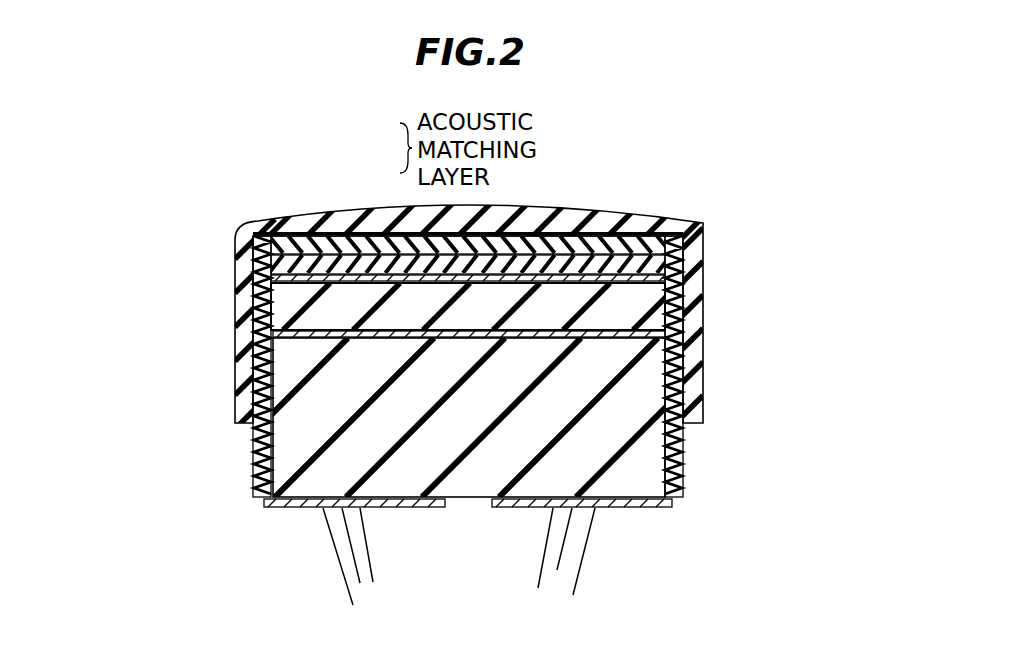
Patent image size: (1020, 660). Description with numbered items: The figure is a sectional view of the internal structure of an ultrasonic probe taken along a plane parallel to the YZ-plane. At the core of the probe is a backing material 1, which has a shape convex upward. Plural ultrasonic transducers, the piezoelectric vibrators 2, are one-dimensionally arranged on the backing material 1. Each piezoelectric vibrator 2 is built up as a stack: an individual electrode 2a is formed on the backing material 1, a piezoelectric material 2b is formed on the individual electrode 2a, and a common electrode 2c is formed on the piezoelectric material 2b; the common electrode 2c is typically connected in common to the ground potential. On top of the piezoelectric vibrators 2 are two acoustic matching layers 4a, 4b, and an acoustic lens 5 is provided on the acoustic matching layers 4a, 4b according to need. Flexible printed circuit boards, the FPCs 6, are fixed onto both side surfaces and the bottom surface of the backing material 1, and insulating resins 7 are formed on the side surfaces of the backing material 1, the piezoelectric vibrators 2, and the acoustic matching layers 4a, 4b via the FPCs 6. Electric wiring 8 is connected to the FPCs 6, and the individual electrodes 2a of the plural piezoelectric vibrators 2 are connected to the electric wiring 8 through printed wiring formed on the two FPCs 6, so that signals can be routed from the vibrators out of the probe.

The backing material 1 is at (645, 463).
The piezoelectric vibrators 2 is at (475, 324).
The individual electrode 2a is at (268, 338).
The piezoelectric material 2b is at (262, 303).
The common electrode 2c is at (250, 268).
The acoustic matching layer 4a is at (350, 258).
The acoustic matching layer 4b is at (331, 240).
The acoustic lens 5 is at (572, 217).
The flexible printed circuit boards (FPCs) 6 is at (260, 463).
The insulating resins 7 is at (262, 233).
The electric wiring 8 is at (542, 552).